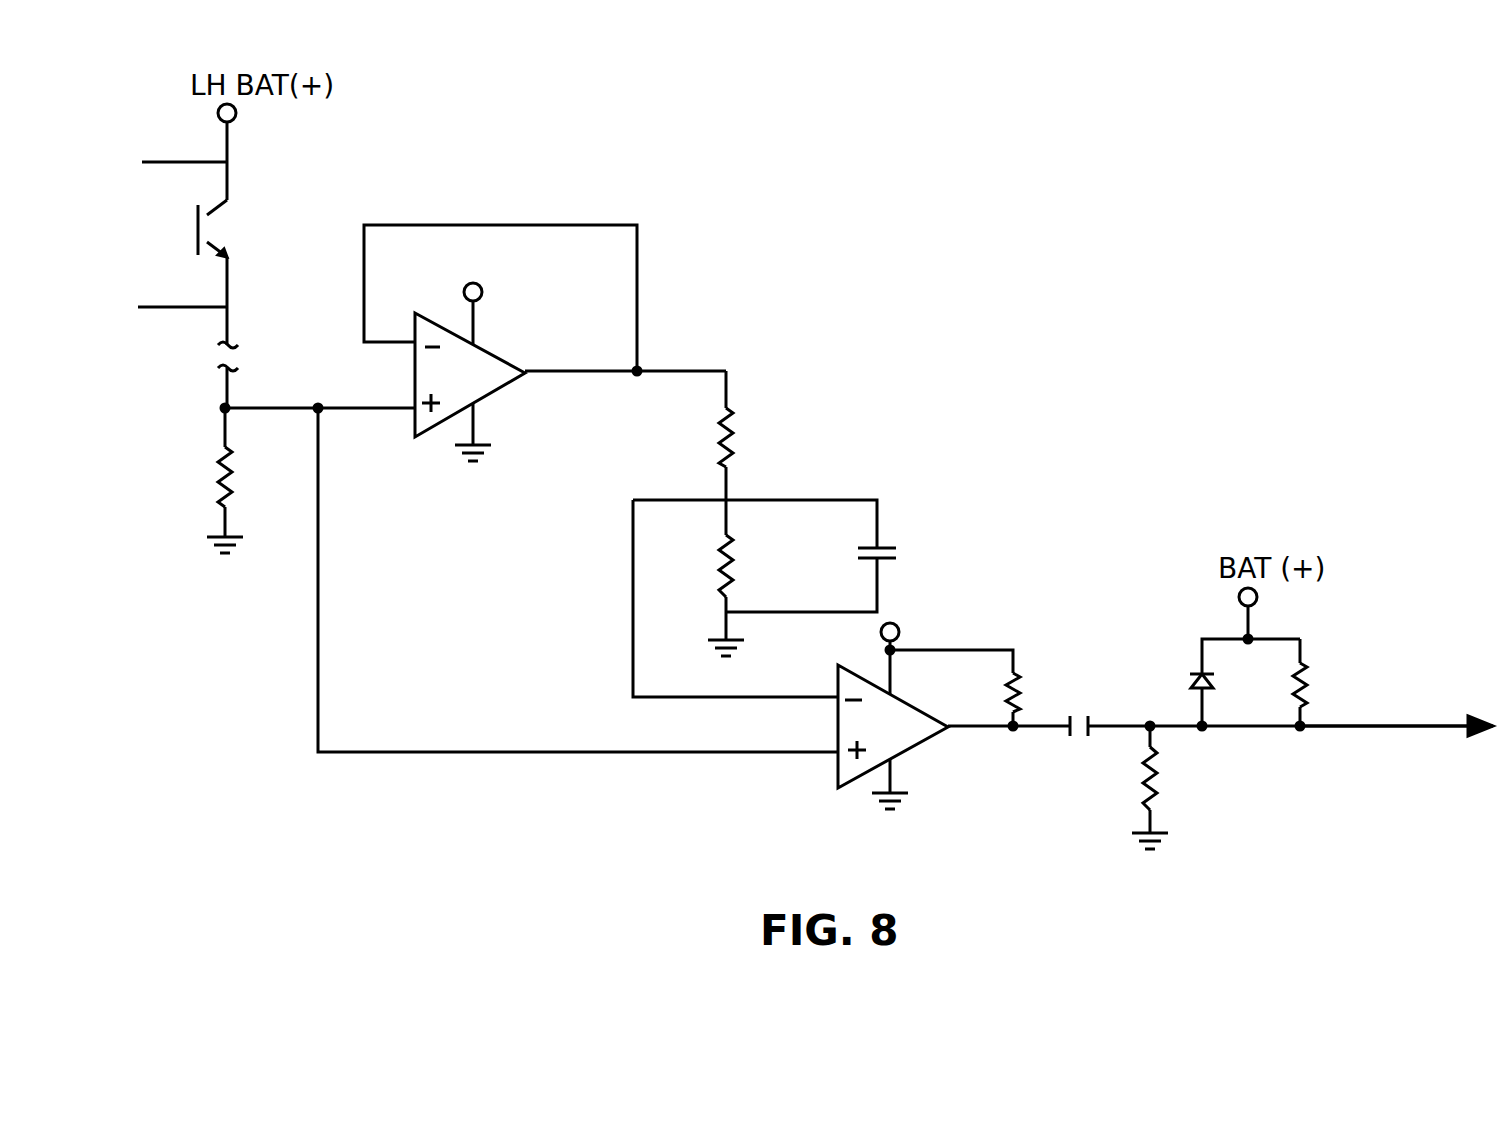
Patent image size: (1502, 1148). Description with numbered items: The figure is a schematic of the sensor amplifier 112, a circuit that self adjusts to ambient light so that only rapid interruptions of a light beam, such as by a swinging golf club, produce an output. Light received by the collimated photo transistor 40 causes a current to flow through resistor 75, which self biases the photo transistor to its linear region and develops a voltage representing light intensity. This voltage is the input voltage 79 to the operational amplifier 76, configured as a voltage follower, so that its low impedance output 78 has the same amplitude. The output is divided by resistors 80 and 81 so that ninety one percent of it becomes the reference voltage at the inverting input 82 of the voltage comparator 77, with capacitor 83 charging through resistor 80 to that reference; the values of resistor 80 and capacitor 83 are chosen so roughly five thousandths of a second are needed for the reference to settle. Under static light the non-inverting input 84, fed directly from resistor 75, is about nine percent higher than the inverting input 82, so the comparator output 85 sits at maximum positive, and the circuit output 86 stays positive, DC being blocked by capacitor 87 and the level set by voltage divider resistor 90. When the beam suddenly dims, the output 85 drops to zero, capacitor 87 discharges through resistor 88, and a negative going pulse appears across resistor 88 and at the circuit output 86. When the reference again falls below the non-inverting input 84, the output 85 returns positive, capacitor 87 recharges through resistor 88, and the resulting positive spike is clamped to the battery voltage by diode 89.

The collimated photo transistor 40 is at (210, 235).
The resistor 75 is at (212, 483).
The operational amplifier 76 is at (505, 360).
The voltage comparator 77 is at (935, 737).
The output of the operational amplifier 78 is at (685, 368).
The input voltage of the operational amplifier 79 is at (295, 405).
The resistor 80 is at (733, 432).
The resistor 81 is at (733, 560).
The inverting input of the voltage comparator 82 is at (728, 700).
The capacitor 83 is at (885, 540).
The non-inverting input of the voltage comparator 84 is at (750, 752).
The output of the voltage comparator 85 is at (985, 727).
The circuit output 86 is at (1422, 723).
The capacitor 87 is at (1078, 740).
The resistor 88 is at (1157, 790).
The diode 89 is at (1192, 667).
The voltage divider resistor 90 is at (1308, 665).
The sensor amplifier 112 is at (905, 397).